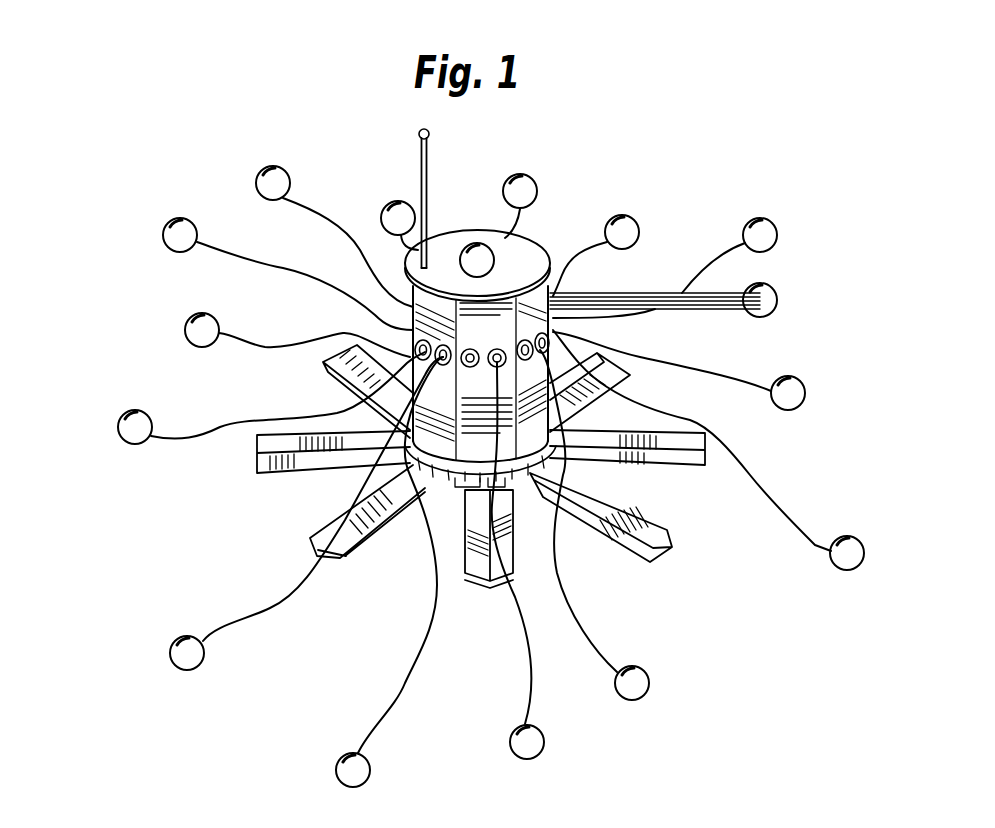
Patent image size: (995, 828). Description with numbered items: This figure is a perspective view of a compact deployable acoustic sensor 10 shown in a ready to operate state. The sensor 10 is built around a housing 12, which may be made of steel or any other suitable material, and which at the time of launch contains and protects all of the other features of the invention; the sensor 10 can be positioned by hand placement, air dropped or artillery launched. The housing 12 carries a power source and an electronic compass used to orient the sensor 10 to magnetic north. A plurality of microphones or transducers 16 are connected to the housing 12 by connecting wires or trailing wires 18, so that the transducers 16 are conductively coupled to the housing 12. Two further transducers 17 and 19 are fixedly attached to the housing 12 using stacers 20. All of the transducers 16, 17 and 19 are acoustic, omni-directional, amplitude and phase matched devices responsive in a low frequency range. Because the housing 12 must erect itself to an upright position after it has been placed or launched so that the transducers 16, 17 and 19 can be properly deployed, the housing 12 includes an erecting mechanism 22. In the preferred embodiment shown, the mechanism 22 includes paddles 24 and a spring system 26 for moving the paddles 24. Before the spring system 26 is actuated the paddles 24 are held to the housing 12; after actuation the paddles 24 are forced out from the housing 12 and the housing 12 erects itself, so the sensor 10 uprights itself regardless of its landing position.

The compact deployable acoustic sensor 10 is at (138, 340).
The housing 12 is at (549, 250).
The transducers 16 is at (258, 172).
The transducer 17 is at (477, 244).
The trailing wires 18 is at (400, 682).
The transducer 19 is at (778, 300).
The stacers 20 is at (605, 292).
The erecting mechanism 22 is at (381, 549).
The paddles 24 is at (275, 475).
The spring system 26 is at (463, 488).